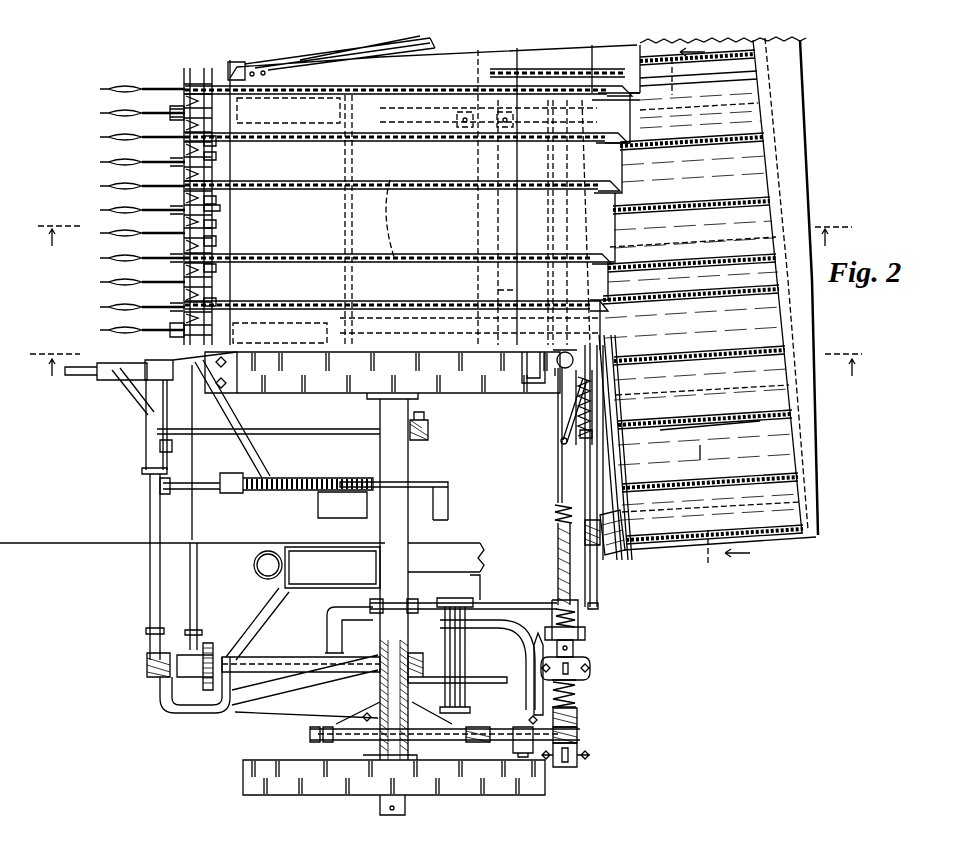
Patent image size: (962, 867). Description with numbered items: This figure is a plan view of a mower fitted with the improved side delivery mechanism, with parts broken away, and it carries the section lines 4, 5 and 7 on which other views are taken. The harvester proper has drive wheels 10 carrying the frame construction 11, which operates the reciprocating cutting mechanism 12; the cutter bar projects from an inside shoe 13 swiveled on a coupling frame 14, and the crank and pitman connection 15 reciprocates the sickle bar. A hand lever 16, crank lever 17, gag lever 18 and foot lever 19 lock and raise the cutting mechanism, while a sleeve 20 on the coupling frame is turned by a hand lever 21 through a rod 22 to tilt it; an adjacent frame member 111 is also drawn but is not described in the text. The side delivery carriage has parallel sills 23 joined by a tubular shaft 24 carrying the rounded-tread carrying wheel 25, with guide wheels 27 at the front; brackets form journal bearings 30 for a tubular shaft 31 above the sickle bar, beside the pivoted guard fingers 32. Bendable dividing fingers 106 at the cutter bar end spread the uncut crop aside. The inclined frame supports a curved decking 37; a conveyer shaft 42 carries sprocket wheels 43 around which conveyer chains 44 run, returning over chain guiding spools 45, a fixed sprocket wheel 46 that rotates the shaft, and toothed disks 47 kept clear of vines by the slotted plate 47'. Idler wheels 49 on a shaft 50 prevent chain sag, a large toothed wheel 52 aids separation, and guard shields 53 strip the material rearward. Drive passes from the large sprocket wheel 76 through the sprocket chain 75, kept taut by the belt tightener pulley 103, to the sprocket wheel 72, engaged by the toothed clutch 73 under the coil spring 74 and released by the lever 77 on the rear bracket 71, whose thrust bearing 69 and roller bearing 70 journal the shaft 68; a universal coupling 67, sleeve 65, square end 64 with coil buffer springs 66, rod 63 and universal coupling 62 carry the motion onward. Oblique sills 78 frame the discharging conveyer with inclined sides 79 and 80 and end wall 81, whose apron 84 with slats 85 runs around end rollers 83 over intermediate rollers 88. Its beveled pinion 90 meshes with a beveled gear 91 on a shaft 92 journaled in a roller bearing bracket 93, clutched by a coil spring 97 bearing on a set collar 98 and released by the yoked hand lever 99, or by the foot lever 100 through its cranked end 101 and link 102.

The section line 4— 4 is at (441, 361).
The section line 5— 5 is at (442, 232).
The section line 7— 7 is at (707, 312).
The drive wheels 10 is at (245, 768).
The frame construction 11 is at (258, 606).
The reciprocating cutting mechanism 12 is at (183, 295).
The inside shoe 13 is at (93, 377).
The coupling frame 14 is at (150, 586).
The crank and pitman connection 15 is at (198, 645).
The hand lever 16 is at (232, 478).
The crank lever 17 is at (160, 487).
The gag lever 18 is at (160, 445).
The foot lever 19 is at (446, 498).
The sleeve 20 is at (147, 410).
The hand lever 21 is at (428, 430).
The rod 22 is at (290, 425).
The sills 23 is at (426, 333).
The shaft 24 is at (505, 290).
The carrying wheel 25 is at (385, 240).
The guide wheels 27 is at (303, 302).
The journal bearings 30 is at (180, 335).
The tubular shaft 31 is at (216, 222).
The guard fingers 32 is at (112, 161).
The curved sheet metal decking 37 is at (480, 236).
The conveyer shaft 42 is at (548, 165).
The sprocket wheels 43 is at (572, 140).
The conveyer chains 44 is at (418, 262).
The chain guiding spools 45 is at (212, 240).
The sprocket wheel 46 is at (216, 302).
The toothed disks 47 is at (230, 204).
The slotted plate 47' is at (205, 239).
The idler wheels 49 is at (368, 147).
The shaft 50 is at (345, 226).
The toothed wheel 52 is at (488, 74).
The guard shields 53 is at (620, 175).
The universal coupling 62 is at (551, 380).
The rod 63 is at (558, 468).
The square end 64 is at (558, 582).
The sleeve 65 is at (558, 562).
The coil buffer springs 66 is at (576, 618).
The universal coupling 67 is at (588, 634).
The shaft 68 is at (573, 650).
The thrust bearing 69 is at (590, 672).
The roller bearing 70 is at (577, 760).
The rear bracket 71 is at (508, 630).
The sprocket wheel 72 is at (577, 738).
The toothed clutch 73 is at (577, 716).
The coil spring 74 is at (576, 697).
The sprocket chain 75 is at (478, 742).
The large sprocket wheel 76 is at (340, 737).
The lever 77 is at (534, 688).
The sills 78 is at (806, 432).
The inclined sheet metal side 79 is at (611, 450).
The inclined sheet metal side 80 is at (797, 150).
The end wall 81 is at (645, 55).
The end rollers 83 is at (805, 486).
The conveyer belt or apron 84 is at (780, 425).
The slats 85 is at (717, 470).
The intermediate rollers 88 is at (654, 384).
The beveled pinion 90 is at (595, 452).
The beveled gear 91 is at (596, 547).
The shaft 92 is at (592, 466).
The roller bearing bracket 93 is at (613, 553).
The coil spring 97 is at (592, 408).
The set collar 98 is at (590, 446).
The yoked hand lever 99 is at (565, 426).
The foot lever 100 is at (327, 630).
The cranked end 101 is at (598, 607).
The link 102 is at (588, 588).
The belt tightener pulley 103 is at (513, 745).
The dividing fingers 106 is at (332, 52).
The brace 111 is at (236, 450).